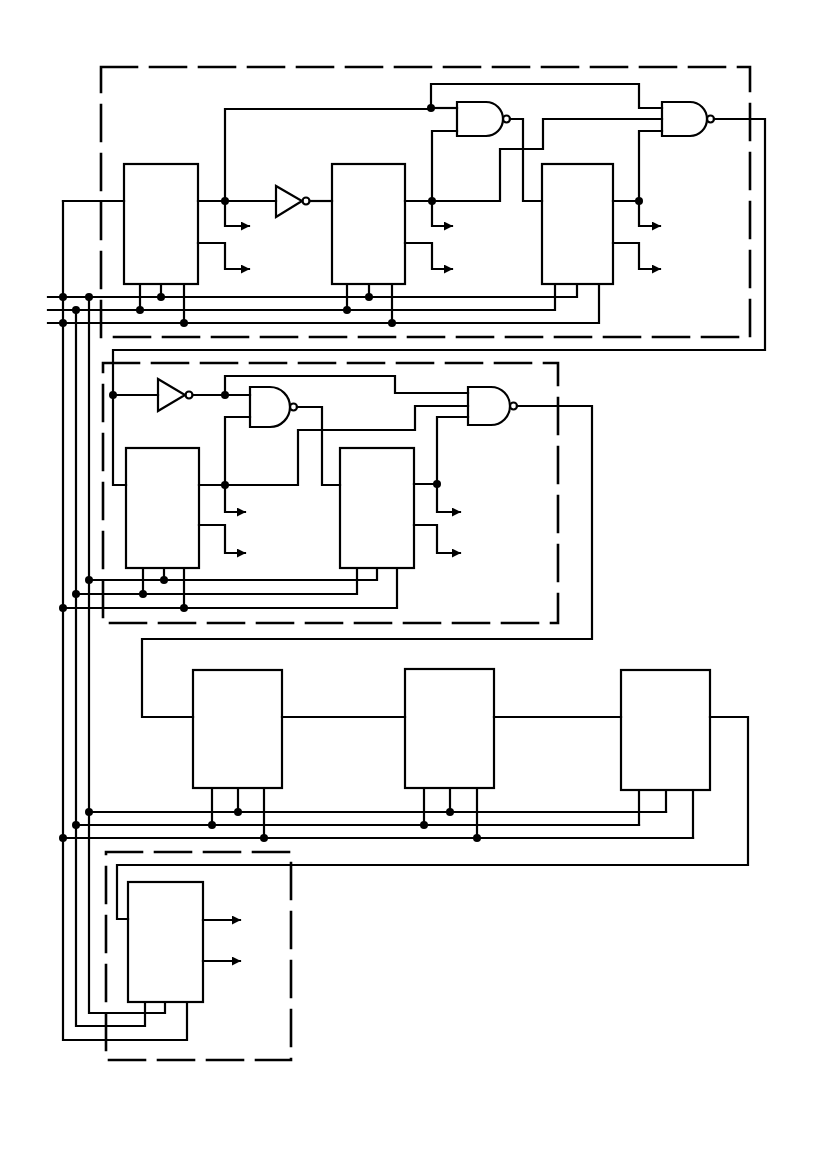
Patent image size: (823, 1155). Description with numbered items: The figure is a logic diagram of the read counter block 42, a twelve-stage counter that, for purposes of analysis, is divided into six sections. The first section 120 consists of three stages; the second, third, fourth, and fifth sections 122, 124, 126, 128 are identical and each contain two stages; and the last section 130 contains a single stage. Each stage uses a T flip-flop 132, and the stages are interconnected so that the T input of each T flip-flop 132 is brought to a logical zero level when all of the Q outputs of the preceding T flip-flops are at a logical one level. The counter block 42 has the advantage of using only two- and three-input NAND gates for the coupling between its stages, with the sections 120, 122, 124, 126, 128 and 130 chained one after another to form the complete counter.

The read counter block 42 is at (95, 32).
The first section 120 is at (480, 67).
The second section 122 is at (558, 396).
The third section 124 is at (282, 698).
The fourth section 126 is at (494, 698).
The fifth section 128 is at (670, 670).
The last section 130 is at (291, 922).
The T flip-flop 132 is at (159, 164).